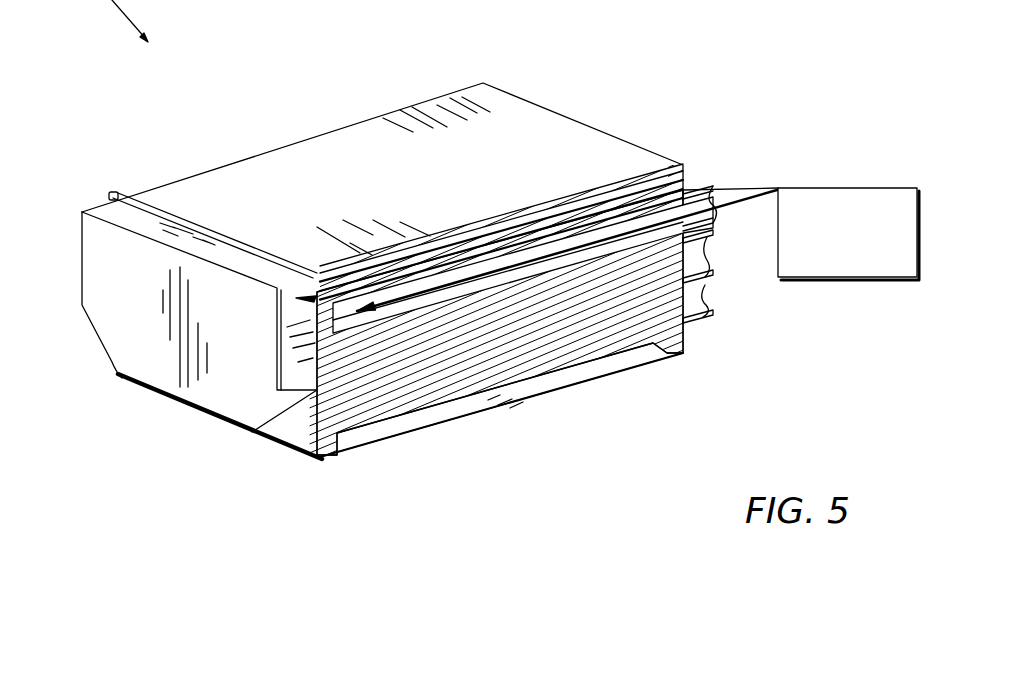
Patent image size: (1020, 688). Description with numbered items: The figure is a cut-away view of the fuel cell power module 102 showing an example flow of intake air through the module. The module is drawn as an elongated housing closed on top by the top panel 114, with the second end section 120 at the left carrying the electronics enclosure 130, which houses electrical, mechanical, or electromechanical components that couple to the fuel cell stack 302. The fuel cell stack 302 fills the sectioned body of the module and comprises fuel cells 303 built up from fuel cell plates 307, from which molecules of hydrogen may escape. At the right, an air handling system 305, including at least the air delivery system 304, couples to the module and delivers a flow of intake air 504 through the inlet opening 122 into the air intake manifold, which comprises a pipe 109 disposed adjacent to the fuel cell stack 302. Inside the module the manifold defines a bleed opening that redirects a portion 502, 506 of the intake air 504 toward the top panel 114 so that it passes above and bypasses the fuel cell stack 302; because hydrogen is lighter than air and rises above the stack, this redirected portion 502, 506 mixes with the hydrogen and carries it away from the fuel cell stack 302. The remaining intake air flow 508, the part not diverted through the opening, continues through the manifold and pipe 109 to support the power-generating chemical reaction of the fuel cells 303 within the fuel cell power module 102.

The fuel cell power module 102 is at (341, 86).
The top panel 114 is at (170, 194).
The electronics enclosure 130 is at (118, 252).
The second end section 120 is at (296, 431).
The fuel cell plates 307 is at (462, 357).
The fuel cells 303 is at (500, 322).
The fuel cell stack 302 is at (488, 495).
The redirected portion of air flow 506 is at (602, 207).
The remaining intake air flow 508 is at (621, 237).
The pipe 109 is at (348, 328).
The redirected portion of air flow 502 is at (708, 190).
The flow of intake air 504 is at (732, 208).
The inlet opening 122 is at (720, 245).
The air delivery system 304 is at (820, 188).
The air handling system 305 is at (878, 137).